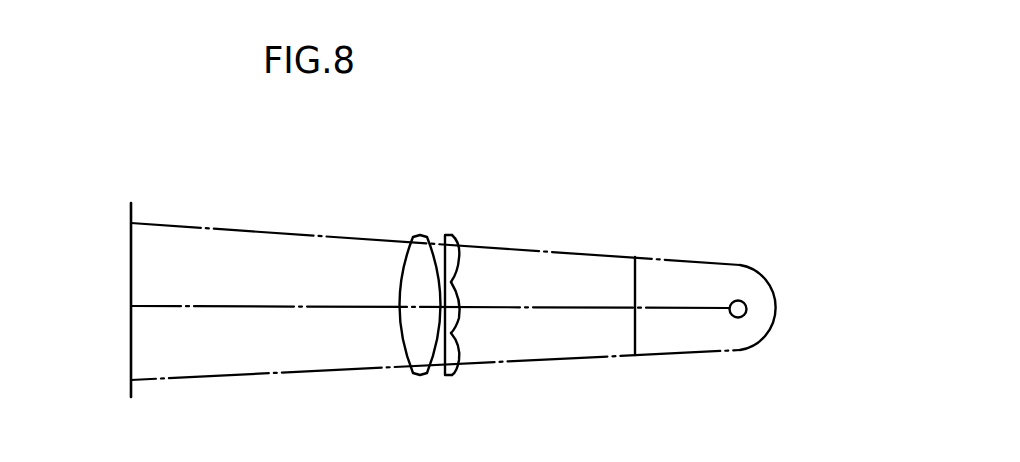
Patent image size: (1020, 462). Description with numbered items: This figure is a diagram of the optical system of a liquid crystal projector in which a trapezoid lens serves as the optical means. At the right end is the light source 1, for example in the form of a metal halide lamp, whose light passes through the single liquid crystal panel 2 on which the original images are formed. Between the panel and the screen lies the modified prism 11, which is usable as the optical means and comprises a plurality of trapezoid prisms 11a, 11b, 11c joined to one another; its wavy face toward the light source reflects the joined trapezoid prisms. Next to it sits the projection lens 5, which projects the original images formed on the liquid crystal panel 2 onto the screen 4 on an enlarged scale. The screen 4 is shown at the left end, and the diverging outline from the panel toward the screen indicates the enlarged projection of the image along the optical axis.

The light source 1 is at (747, 285).
The liquid crystal panel 2 is at (636, 258).
The screen 4 is at (133, 216).
The projection lens 5 is at (421, 235).
The modified prism 11 is at (526, 256).
The trapezoid prism 11a is at (455, 243).
The trapezoid prism 11b is at (456, 295).
The trapezoid prism 11c is at (457, 350).